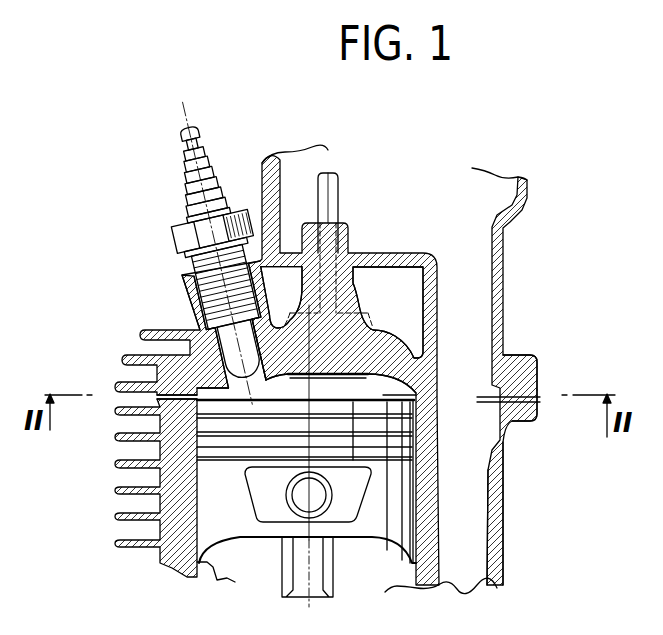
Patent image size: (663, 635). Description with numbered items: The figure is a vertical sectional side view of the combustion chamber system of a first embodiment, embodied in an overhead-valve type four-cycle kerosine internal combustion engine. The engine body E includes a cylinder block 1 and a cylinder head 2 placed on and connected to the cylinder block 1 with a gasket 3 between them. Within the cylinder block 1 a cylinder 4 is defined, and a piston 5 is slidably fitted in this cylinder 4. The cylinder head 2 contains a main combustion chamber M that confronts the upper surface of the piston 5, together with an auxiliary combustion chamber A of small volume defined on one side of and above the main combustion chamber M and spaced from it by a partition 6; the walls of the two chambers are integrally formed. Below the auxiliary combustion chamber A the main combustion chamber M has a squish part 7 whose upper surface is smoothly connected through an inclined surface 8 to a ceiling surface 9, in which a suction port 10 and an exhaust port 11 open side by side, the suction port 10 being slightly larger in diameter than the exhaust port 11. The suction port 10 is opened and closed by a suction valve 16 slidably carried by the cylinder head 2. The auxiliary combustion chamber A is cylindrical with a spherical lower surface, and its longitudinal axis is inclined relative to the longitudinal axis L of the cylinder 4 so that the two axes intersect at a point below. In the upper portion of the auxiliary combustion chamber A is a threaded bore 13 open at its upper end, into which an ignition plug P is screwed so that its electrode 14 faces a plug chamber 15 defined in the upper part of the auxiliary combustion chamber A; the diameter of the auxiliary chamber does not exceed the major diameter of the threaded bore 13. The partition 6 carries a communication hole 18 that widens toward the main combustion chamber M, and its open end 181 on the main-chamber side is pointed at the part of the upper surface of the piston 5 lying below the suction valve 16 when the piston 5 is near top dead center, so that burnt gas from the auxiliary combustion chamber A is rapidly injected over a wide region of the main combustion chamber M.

The cylinder block 1 is at (500, 522).
The cylinder head 2 is at (522, 356).
The gasket 3 is at (535, 409).
The cylinder 4 is at (414, 516).
The piston 5 is at (372, 528).
The partition 6 is at (233, 392).
The squish part 7 is at (218, 392).
The inclined surface 8 is at (255, 400).
The ceiling surface 9 is at (392, 380).
The suction port 10 is at (388, 312).
The exhaust port 11 is at (373, 337).
The threaded bore 13 is at (203, 303).
The electrode 14 is at (262, 300).
The plug chamber 15 is at (227, 363).
The suction valve 16 is at (338, 202).
The communication hole 18 is at (257, 375).
The open end of communication hole 181 is at (275, 390).
The ignition plug P is at (188, 222).
The engine body E is at (510, 270).
The auxiliary combustion chamber A is at (277, 370).
The longitudinal axis of the cylinder L is at (307, 460).
The main combustion chamber M is at (412, 390).